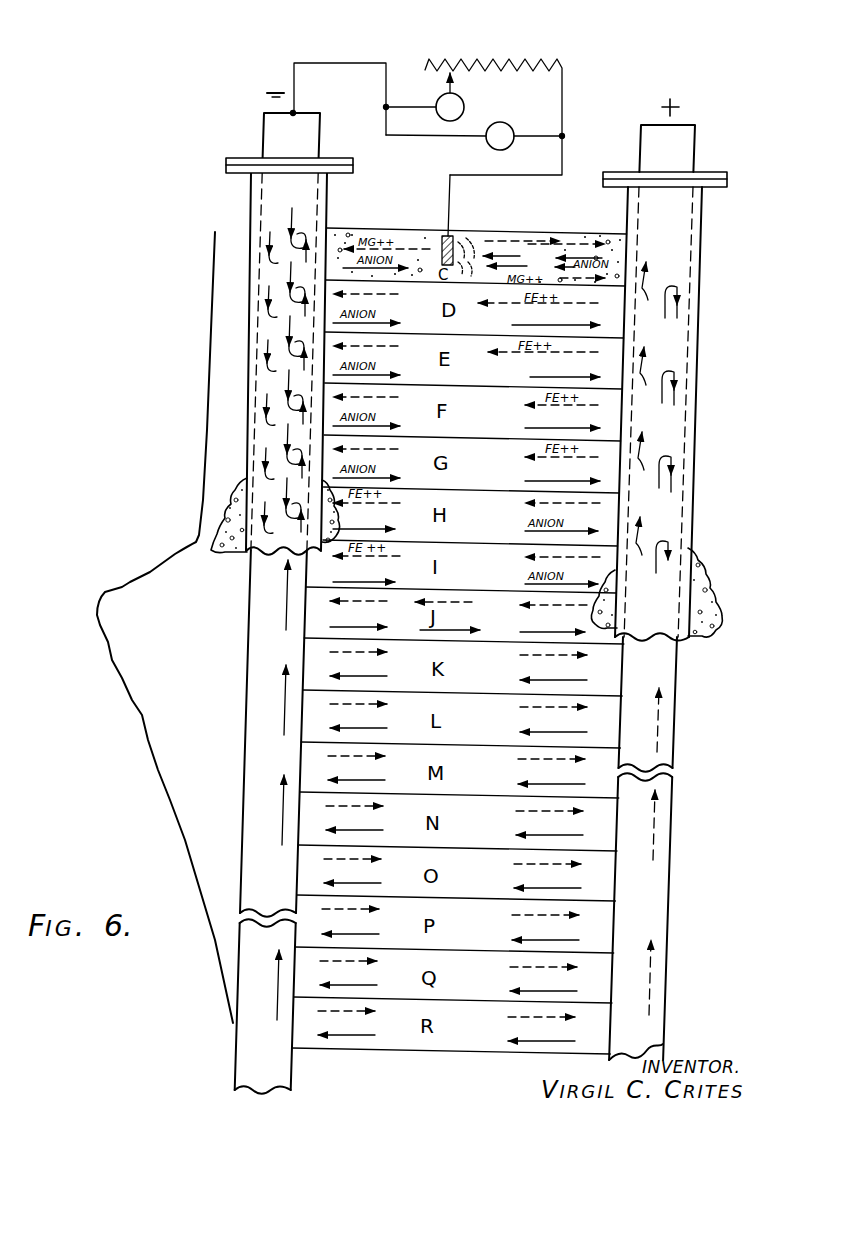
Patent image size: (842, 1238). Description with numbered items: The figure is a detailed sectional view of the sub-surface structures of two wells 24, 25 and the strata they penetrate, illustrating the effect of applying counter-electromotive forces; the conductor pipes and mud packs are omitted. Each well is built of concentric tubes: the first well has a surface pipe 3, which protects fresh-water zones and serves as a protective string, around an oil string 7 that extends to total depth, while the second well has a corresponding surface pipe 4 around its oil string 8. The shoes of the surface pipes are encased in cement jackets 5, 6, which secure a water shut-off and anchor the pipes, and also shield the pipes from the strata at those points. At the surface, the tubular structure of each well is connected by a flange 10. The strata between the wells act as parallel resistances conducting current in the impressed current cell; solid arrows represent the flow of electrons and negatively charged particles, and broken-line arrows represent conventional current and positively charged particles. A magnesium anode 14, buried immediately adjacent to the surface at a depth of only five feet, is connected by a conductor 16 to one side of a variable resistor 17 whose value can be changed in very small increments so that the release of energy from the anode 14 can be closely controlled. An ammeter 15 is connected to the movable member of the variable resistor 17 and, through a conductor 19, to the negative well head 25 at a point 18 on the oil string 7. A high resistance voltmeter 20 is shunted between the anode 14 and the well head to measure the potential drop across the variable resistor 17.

The surface pipe 3 is at (249, 192).
The surface pipe 4 is at (702, 330).
The cement jacket 5 is at (224, 549).
The cement jacket 6 is at (718, 622).
The oil string 7 is at (262, 128).
The oil string 8 is at (699, 143).
The flange 10 is at (224, 165).
The magnesium anode 14 is at (452, 238).
The ammeter 15 is at (467, 104).
The conductor 16 is at (565, 160).
The variable resistor 17 is at (566, 72).
The point on the oil string 18 is at (291, 112).
The conductor 19 is at (297, 90).
The high resistance voltmeter 20 is at (513, 125).
The well 24 is at (678, 102).
The well 25 is at (275, 88).